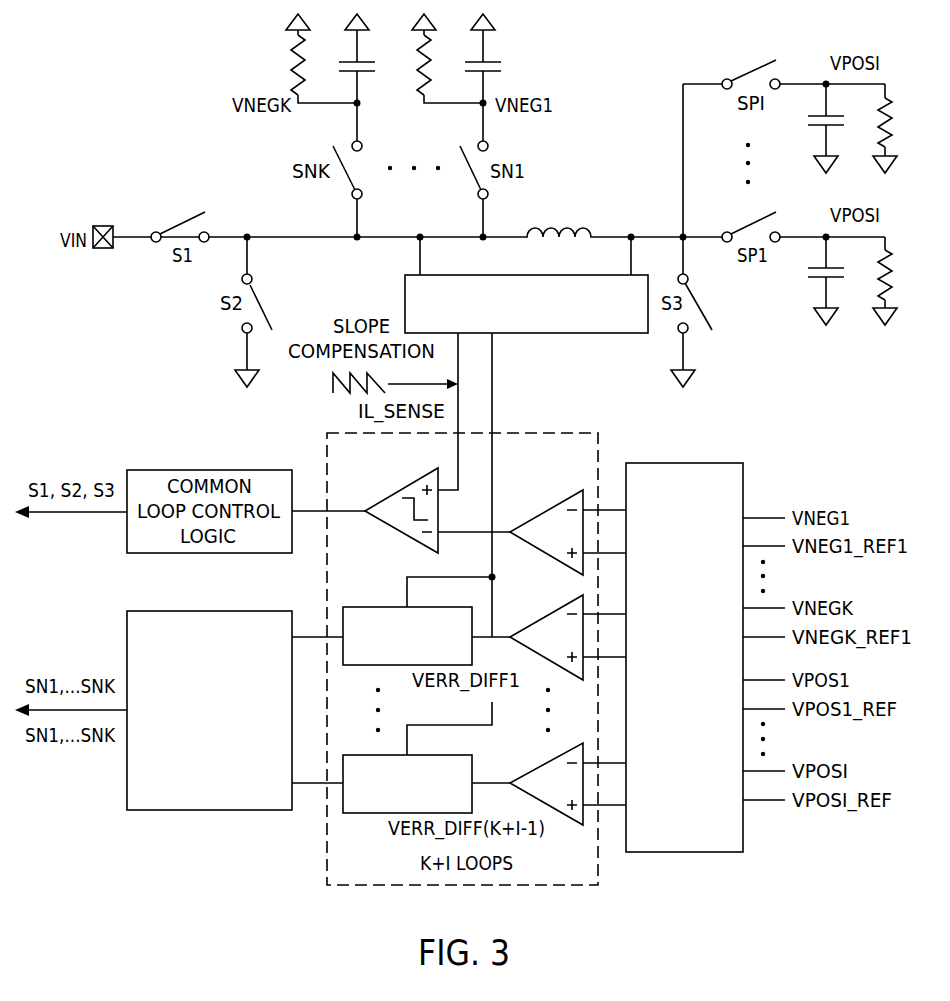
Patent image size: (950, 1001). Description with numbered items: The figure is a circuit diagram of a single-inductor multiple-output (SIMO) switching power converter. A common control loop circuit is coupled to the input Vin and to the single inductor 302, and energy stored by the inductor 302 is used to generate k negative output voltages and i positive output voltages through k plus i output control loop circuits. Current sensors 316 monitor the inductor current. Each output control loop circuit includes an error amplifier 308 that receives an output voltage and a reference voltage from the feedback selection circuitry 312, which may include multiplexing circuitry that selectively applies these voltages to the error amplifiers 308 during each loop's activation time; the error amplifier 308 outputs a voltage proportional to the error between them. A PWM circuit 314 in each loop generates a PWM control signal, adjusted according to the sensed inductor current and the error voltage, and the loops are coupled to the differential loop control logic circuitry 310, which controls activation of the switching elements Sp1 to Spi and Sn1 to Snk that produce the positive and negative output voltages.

The inductor 302 is at (558, 226).
The current sensor 316 is at (553, 275).
The error amplifier 308 is at (555, 510).
The differential loop control logic circuitry 310 is at (208, 611).
The feedback selection circuitry 312 is at (688, 463).
The PWM circuit 314 is at (428, 607).